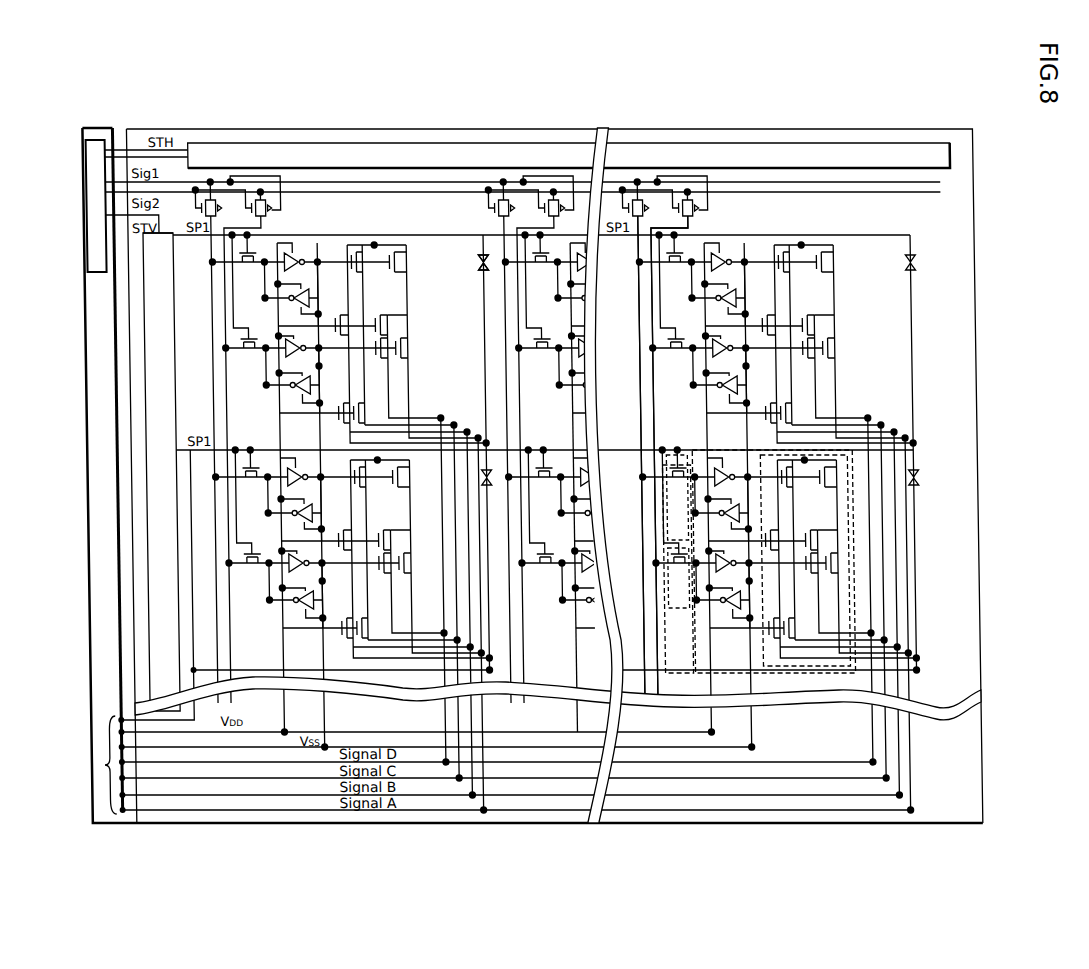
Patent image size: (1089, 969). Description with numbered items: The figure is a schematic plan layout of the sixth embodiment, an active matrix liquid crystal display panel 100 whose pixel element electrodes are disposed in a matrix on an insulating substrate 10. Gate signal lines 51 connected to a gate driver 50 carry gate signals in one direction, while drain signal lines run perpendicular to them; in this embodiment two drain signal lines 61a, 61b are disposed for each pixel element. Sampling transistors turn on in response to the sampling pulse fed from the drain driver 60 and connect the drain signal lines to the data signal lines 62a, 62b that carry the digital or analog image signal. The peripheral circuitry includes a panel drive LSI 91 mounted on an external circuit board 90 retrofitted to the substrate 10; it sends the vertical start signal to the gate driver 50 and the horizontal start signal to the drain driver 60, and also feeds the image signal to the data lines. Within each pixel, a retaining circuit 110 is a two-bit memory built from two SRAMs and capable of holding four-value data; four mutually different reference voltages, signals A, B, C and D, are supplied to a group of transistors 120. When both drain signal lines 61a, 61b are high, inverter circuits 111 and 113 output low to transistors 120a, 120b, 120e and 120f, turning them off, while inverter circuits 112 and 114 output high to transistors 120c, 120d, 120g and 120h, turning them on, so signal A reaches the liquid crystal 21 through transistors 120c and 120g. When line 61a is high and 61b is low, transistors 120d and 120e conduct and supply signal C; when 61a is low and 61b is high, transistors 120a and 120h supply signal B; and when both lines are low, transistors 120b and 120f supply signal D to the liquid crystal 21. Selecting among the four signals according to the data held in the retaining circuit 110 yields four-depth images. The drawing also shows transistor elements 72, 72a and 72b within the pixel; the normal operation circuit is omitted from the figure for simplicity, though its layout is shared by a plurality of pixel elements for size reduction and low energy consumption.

The insulating substrate 10 is at (716, 131).
The liquid crystal 21 is at (485, 272).
The gate driver 50 is at (144, 420).
The gate signal lines 51 is at (178, 235).
The drain driver 60 is at (490, 143).
The drain signal line 61a is at (225, 322).
The drain signal line 61b is at (212, 281).
The data signal line 62a is at (370, 184).
The data signal line 62b is at (406, 184).
The sampling transistor unit 72 is at (675, 618).
The sampling transistor 72a is at (672, 478).
The sampling transistor 72b is at (672, 568).
The external circuit board 90 is at (85, 493).
The panel drive LSI 91 is at (100, 140).
The liquid crystal display panel 100 is at (600, 110).
The retaining circuit 110 is at (850, 576).
The inverter circuit 111 is at (293, 252).
The inverter circuit 112 is at (310, 302).
The inverter circuit 113 is at (284, 360).
The inverter circuit 114 is at (305, 406).
The transistors 120 is at (848, 598).
The transistor 120a is at (360, 275).
The transistor 120b is at (397, 272).
The transistor 120c is at (344, 337).
The transistor 120d is at (388, 326).
The transistor 120e is at (382, 360).
The transistor 120f is at (412, 352).
The transistor 120g is at (347, 395).
The transistor 120h is at (367, 413).